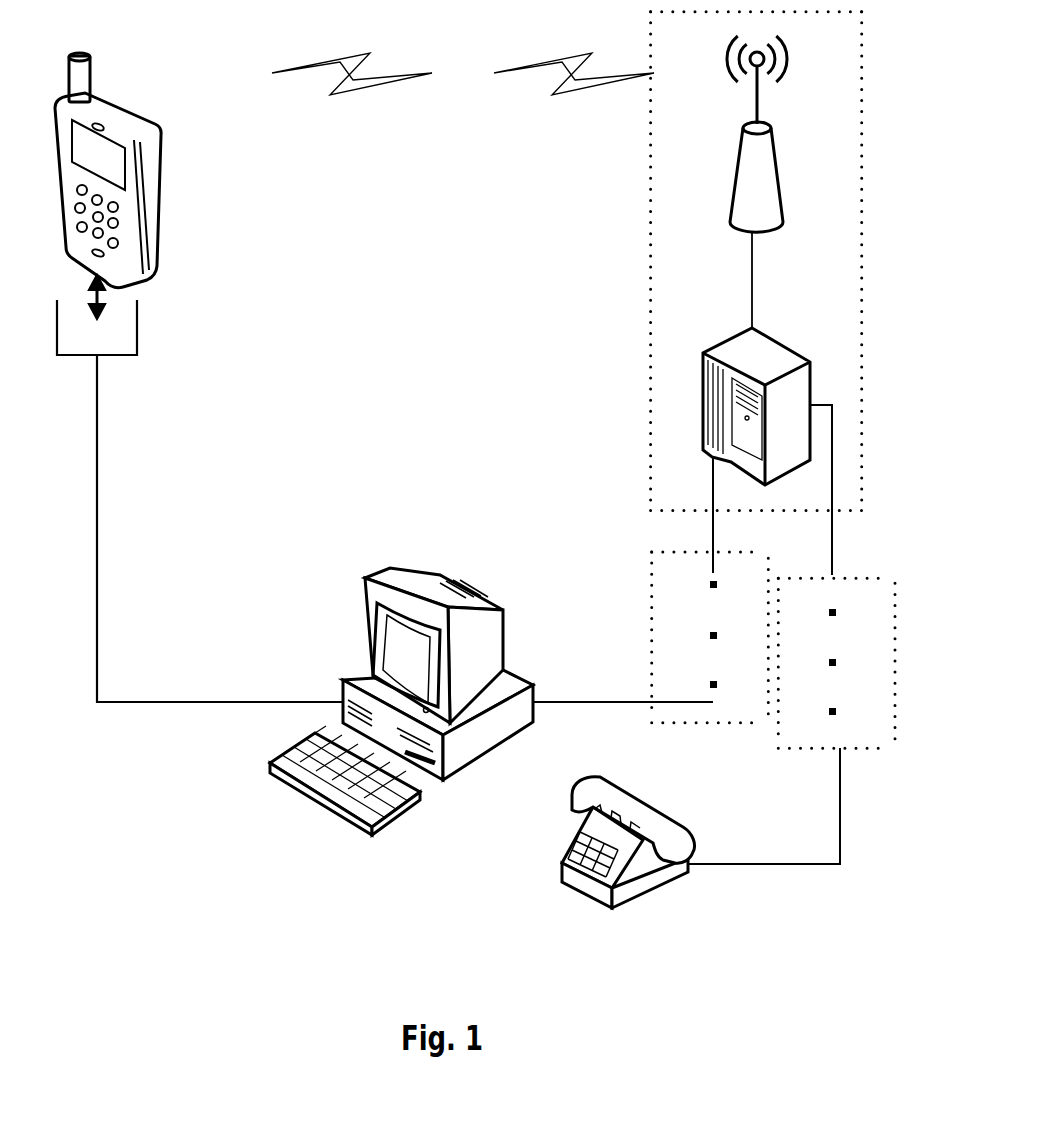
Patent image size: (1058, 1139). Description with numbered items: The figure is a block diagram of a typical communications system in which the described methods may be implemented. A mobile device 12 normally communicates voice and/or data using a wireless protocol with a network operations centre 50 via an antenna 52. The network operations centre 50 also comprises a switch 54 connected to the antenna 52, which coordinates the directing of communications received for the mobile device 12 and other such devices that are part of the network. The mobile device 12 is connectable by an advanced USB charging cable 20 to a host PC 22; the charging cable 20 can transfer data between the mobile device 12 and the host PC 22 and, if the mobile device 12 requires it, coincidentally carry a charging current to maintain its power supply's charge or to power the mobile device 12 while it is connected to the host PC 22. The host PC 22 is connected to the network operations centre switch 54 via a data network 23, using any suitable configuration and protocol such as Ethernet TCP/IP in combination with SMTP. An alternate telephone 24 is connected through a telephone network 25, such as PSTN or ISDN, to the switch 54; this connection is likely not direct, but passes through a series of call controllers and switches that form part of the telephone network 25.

The mobile device 12 is at (138, 168).
The advanced USB charging cable 20 is at (95, 457).
The host PC 22 is at (445, 583).
The data network 23 is at (652, 619).
The alternate telephone 24 is at (640, 813).
The telephone network 25 is at (815, 752).
The network operations centre 50 is at (652, 325).
The antenna 52 is at (755, 150).
The switch 54 is at (763, 353).